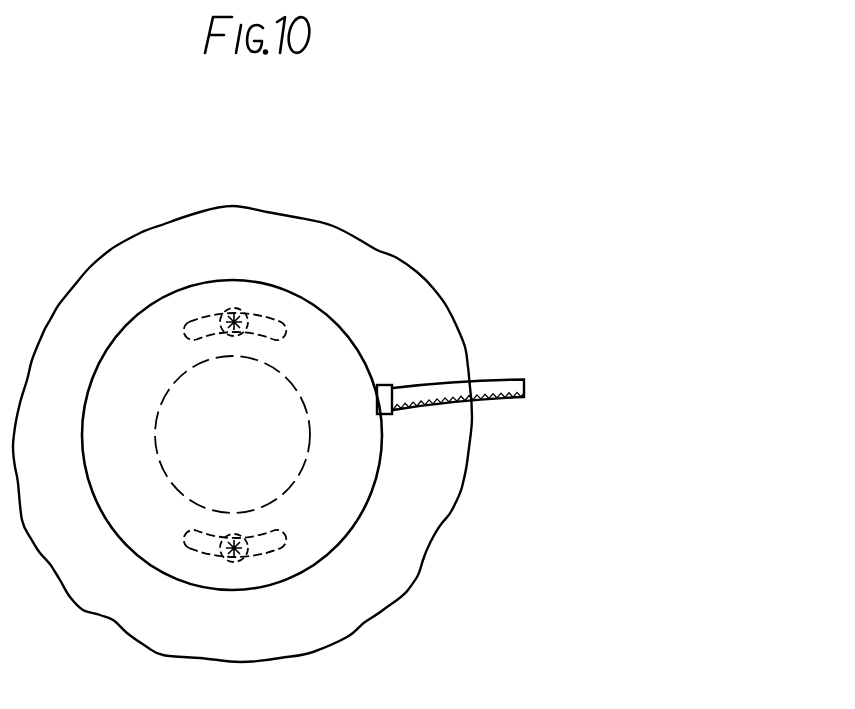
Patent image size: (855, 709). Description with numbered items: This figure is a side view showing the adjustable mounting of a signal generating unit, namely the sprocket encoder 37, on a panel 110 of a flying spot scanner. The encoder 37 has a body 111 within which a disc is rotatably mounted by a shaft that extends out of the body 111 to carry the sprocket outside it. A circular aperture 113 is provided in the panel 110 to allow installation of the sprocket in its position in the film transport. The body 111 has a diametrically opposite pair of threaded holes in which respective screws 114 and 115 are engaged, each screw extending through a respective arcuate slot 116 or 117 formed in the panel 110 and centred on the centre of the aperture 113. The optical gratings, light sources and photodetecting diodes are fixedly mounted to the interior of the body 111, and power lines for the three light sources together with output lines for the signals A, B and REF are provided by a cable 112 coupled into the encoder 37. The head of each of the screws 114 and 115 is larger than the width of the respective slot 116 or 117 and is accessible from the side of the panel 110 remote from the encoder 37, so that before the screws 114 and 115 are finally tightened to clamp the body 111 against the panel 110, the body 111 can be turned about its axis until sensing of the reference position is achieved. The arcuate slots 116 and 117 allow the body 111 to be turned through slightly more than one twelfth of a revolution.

The panel 110 is at (247, 226).
The body 111 is at (174, 293).
The sprocket encoder 37 is at (333, 314).
The cable 112 is at (433, 387).
The circular aperture 113 is at (157, 458).
The screw 114 is at (249, 306).
The screw 115 is at (247, 561).
The arcuate slot 116 is at (210, 313).
The arcuate slot 117 is at (203, 557).